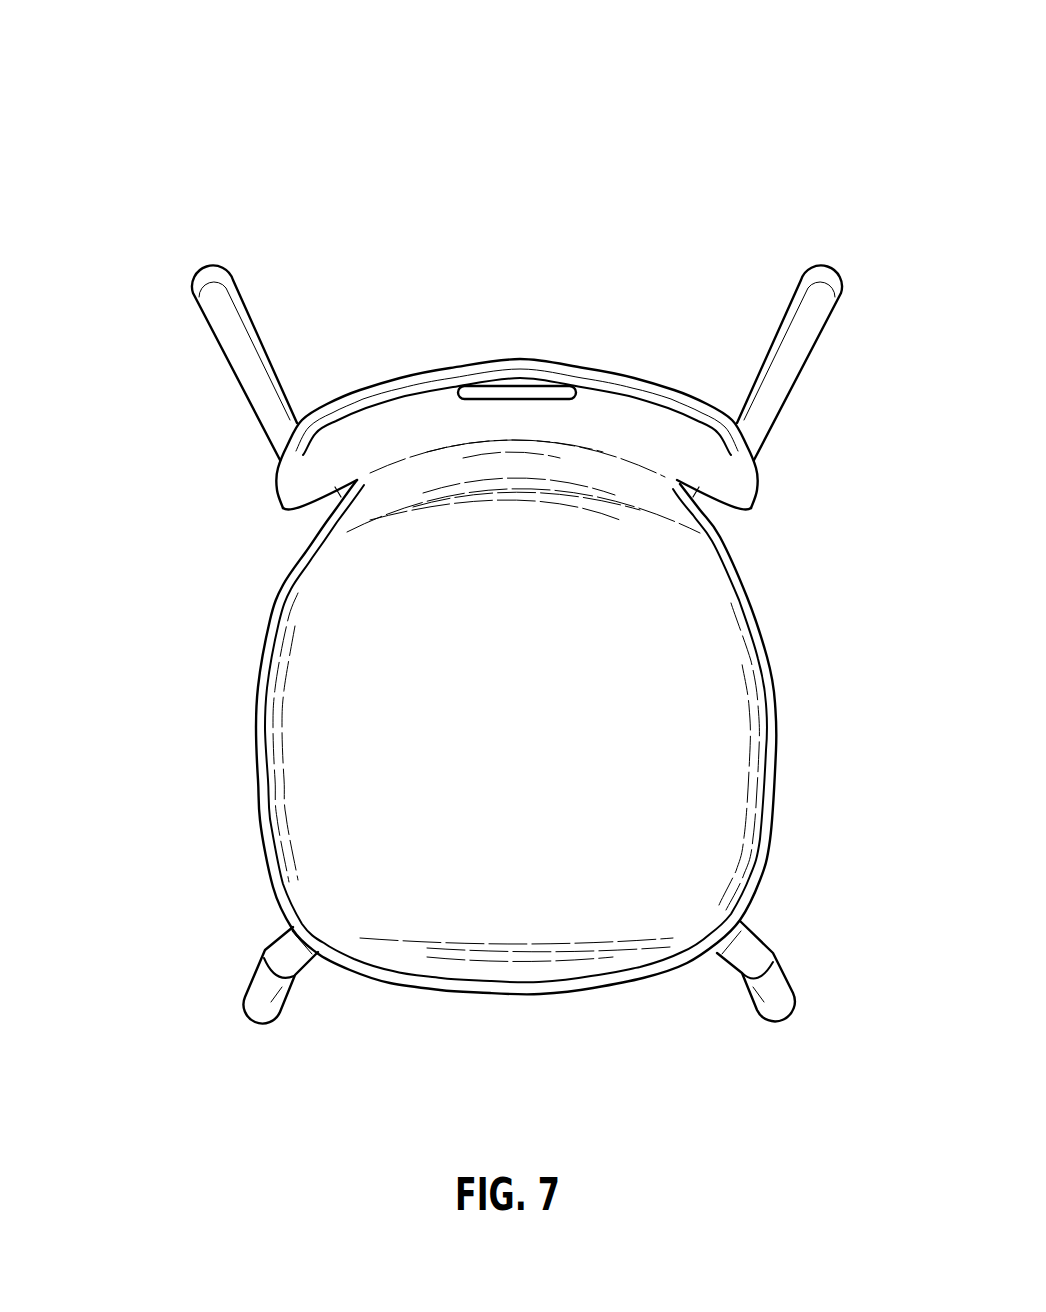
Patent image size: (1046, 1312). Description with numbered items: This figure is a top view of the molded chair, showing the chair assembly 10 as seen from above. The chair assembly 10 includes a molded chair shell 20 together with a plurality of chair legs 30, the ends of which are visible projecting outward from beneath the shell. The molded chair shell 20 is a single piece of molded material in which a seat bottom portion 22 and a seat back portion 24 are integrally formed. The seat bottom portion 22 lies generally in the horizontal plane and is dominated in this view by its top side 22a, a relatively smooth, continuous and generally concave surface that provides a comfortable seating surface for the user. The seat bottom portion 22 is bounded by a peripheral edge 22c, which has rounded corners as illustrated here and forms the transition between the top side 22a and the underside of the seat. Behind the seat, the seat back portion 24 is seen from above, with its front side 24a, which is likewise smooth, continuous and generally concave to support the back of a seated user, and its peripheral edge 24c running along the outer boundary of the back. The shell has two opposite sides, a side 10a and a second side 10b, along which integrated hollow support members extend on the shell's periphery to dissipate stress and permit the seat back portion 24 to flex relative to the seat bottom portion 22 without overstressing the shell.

The chair assembly 10 is at (554, 119).
The side 10a is at (774, 587).
The second side 10b is at (250, 581).
The molded chair shell 20 is at (217, 693).
The seat bottom portion 22 is at (422, 815).
The top side 22a is at (563, 778).
The peripheral edge 22c is at (390, 982).
The seat back portion 24 is at (587, 437).
The front side 24a is at (420, 435).
The peripheral edge 24c is at (532, 360).
The chair legs 30 is at (229, 364).